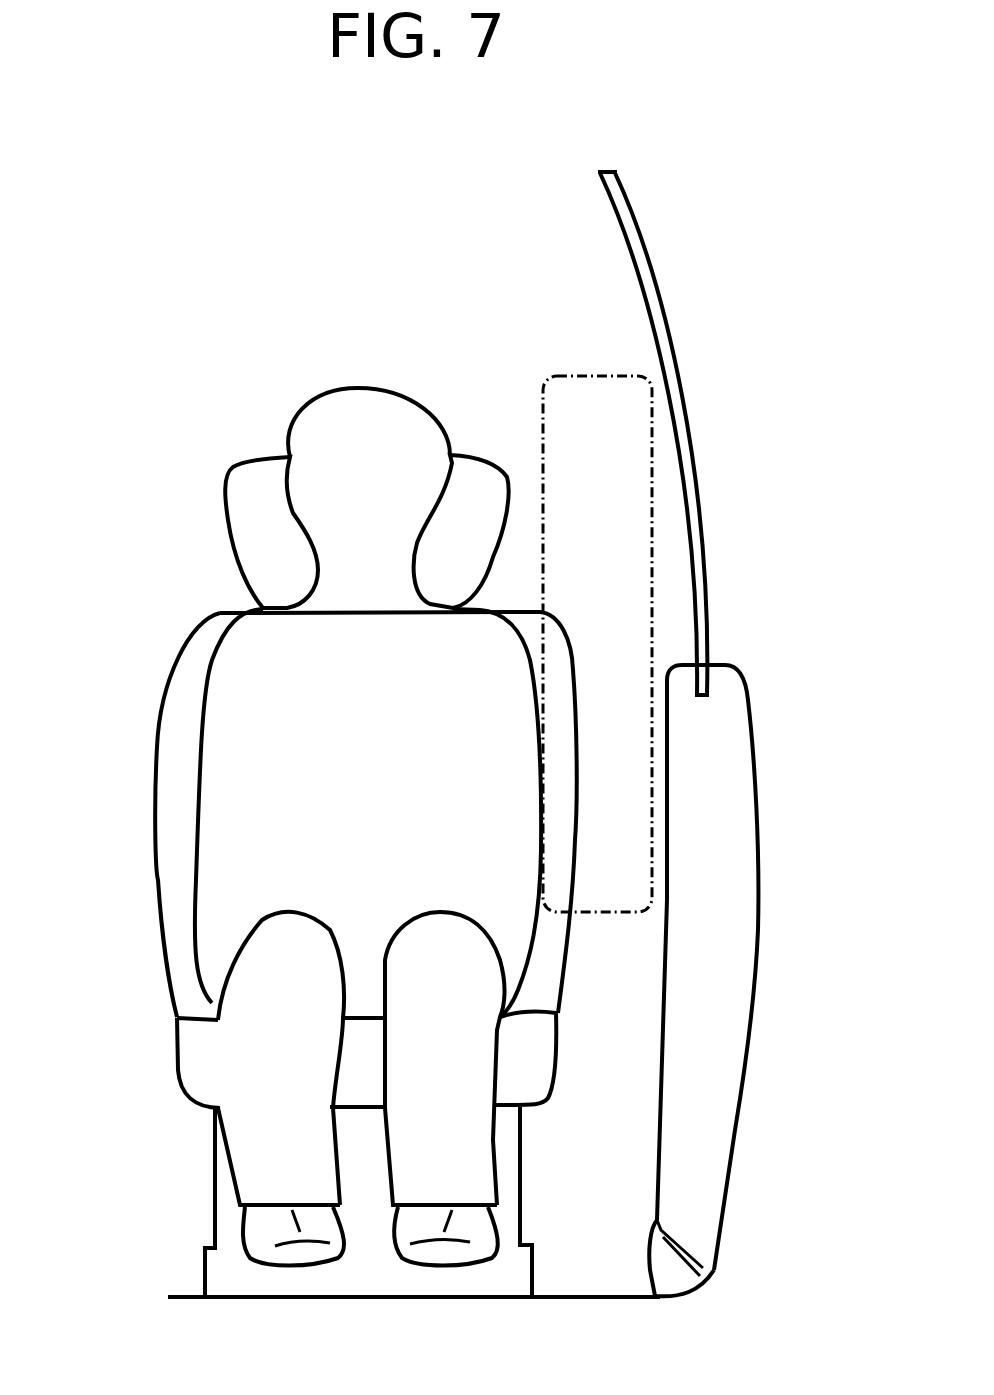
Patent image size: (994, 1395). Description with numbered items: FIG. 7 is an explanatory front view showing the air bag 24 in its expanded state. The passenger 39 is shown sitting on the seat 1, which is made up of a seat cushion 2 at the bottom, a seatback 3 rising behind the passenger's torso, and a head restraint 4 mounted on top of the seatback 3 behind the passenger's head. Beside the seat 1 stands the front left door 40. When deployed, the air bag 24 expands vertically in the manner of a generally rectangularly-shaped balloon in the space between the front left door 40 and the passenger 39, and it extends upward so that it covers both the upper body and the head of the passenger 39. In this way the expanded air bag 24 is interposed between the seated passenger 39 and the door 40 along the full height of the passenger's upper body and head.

The seat 1 is at (142, 748).
The seat cushion 2 is at (175, 1078).
The seatback 3 is at (157, 890).
The head restraint 4 is at (228, 470).
The air bag 24 is at (572, 372).
The passenger 39 is at (232, 660).
The front left door 40 is at (753, 722).